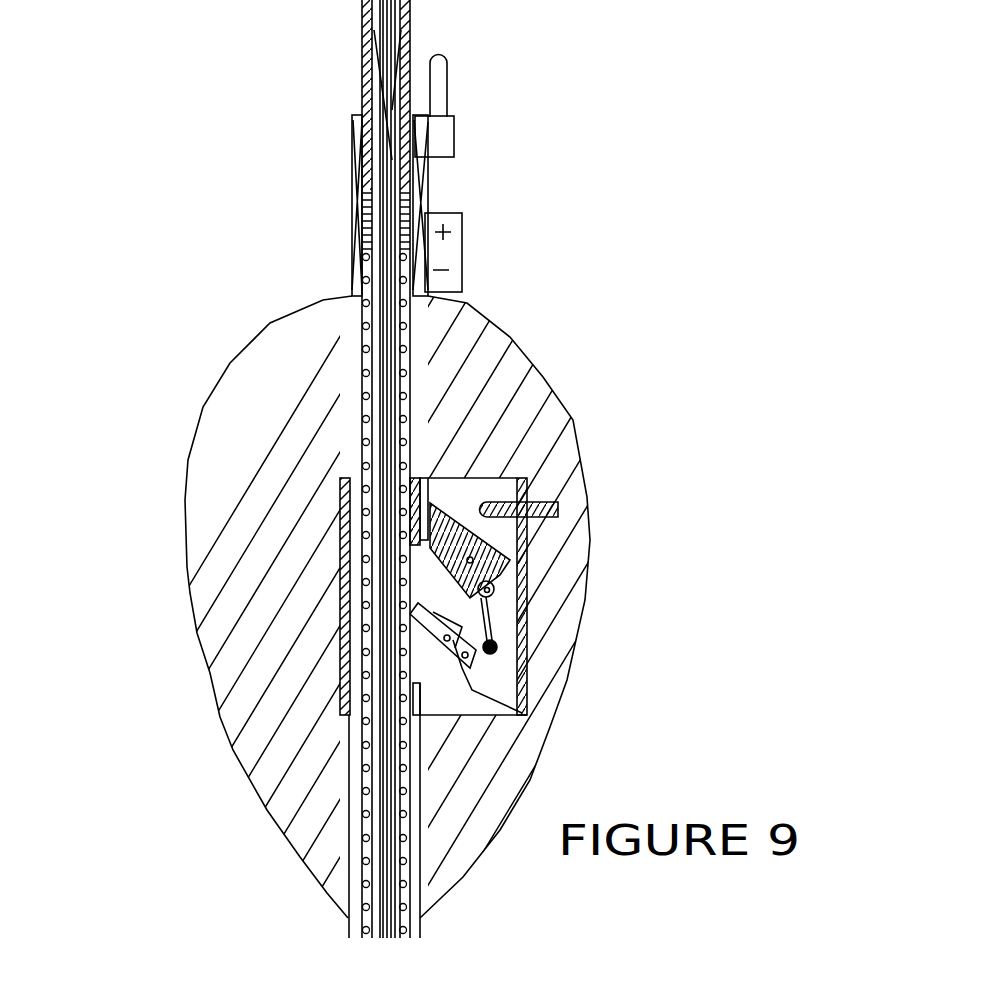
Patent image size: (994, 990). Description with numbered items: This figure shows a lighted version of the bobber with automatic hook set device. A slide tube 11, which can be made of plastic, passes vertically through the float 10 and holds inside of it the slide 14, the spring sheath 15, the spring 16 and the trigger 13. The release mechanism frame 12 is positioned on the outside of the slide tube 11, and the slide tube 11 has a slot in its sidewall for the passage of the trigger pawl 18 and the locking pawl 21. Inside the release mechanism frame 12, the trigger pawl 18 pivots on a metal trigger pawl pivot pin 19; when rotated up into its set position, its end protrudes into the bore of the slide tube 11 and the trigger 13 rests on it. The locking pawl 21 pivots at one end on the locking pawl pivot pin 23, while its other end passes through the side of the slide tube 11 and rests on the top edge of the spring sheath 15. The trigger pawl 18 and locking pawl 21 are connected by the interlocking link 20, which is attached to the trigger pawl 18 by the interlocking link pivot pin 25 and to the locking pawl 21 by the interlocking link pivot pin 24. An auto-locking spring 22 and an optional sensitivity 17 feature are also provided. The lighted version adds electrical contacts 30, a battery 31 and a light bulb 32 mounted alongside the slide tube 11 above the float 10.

The float 10 is at (290, 335).
The slide tube 11 is at (357, 172).
The release mechanism frame 12 is at (347, 493).
The trigger 13 is at (365, 33).
The slide 14 is at (372, 567).
The spring sheath 15 is at (365, 632).
The spring 16 is at (368, 693).
The optional sensitivity 17 is at (527, 508).
The trigger pawl 18 is at (527, 517).
The trigger pawl pivot pin 19 is at (470, 558).
The interlocking link 20 is at (486, 600).
The locking pawl 21 is at (463, 663).
The auto-locking spring 22 is at (520, 625).
The locking pawl pivot pin 23 is at (463, 660).
The interlocking link pivot pin 24 is at (457, 658).
The interlocking link pivot pin 25 is at (490, 589).
The electrical contacts 30 is at (430, 478).
The battery 31 is at (460, 240).
The light bulb 32 is at (437, 80).